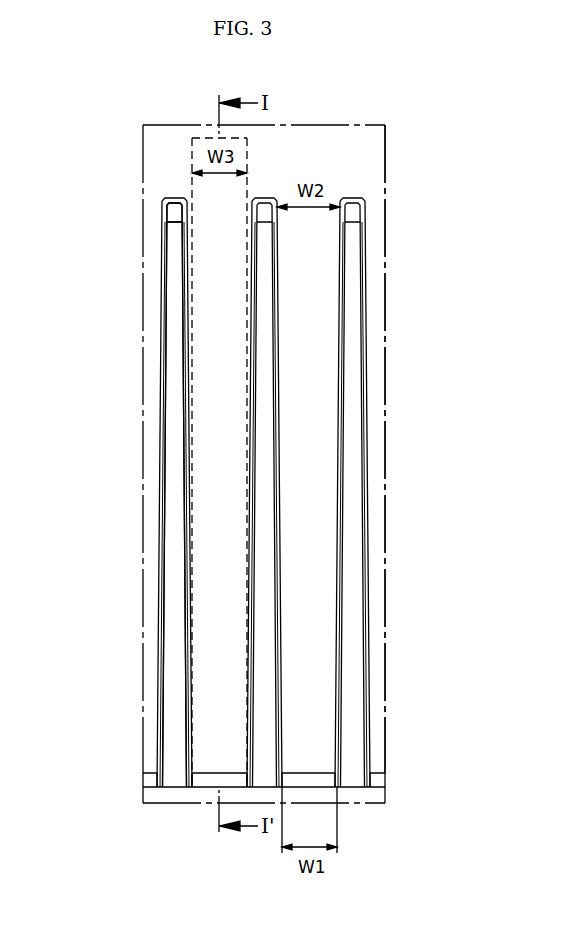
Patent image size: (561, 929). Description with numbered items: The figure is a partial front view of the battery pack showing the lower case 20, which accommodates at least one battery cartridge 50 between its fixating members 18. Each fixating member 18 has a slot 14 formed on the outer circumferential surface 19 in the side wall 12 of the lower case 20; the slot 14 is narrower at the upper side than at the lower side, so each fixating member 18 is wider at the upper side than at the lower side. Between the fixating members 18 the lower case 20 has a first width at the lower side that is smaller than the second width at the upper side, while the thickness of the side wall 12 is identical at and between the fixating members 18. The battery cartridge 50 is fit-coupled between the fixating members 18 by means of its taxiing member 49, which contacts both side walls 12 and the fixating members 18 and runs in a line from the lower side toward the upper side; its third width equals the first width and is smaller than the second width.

The side wall 12 is at (147, 686).
The slot 14 is at (177, 775).
The fixating member 18 is at (158, 636).
The outer circumferential surface 19 is at (375, 151).
The lower case 20 is at (385, 190).
The taxiing member 49 is at (175, 495).
The battery cartridge 50 is at (218, 396).